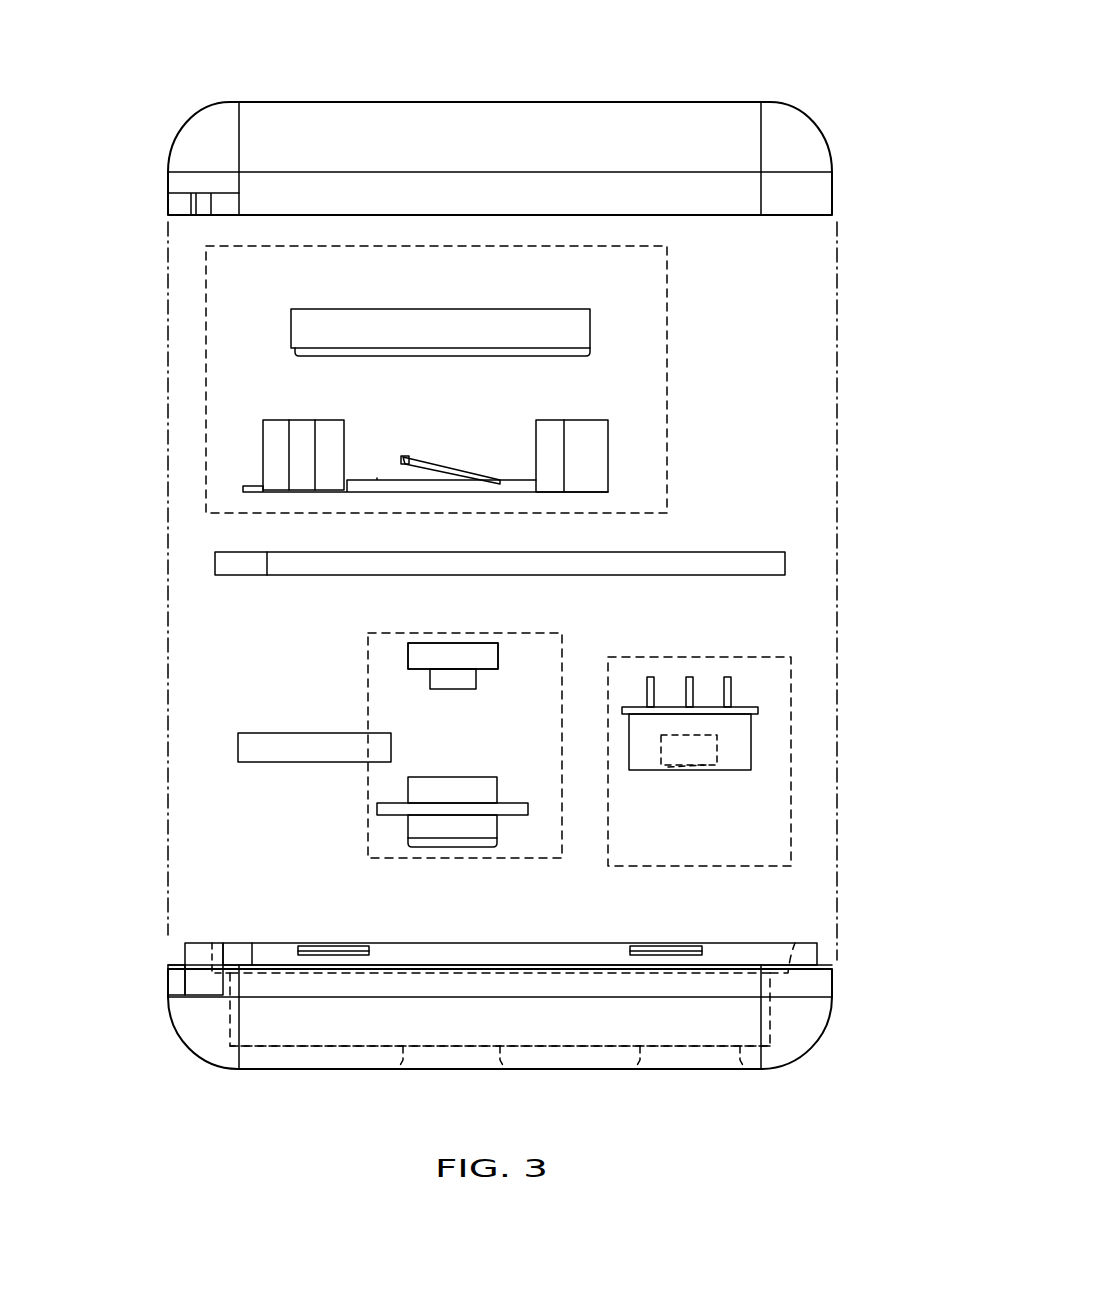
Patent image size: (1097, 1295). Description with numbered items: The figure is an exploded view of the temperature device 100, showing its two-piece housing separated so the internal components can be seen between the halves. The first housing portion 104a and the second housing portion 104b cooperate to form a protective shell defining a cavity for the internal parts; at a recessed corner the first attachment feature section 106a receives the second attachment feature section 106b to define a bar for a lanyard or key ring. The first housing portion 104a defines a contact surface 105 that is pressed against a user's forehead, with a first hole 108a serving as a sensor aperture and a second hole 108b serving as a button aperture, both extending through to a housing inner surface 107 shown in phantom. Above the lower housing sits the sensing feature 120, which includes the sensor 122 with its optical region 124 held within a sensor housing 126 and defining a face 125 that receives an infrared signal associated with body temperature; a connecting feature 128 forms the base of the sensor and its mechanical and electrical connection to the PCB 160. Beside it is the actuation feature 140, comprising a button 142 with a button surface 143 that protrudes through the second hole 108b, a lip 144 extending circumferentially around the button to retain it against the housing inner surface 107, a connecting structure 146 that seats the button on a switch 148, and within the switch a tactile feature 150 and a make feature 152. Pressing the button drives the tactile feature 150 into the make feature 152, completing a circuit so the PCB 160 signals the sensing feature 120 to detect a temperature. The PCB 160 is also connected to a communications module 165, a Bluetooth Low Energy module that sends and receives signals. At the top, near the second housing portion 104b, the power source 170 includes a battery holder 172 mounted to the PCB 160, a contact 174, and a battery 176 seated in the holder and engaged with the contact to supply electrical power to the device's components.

The temperature device 100 is at (694, 62).
The first housing portion 104a is at (803, 1030).
The second housing portion 104b is at (808, 116).
The contact surface 105 is at (750, 1069).
The first attachment feature section 106a is at (175, 980).
The second attachment feature section 106b is at (198, 203).
The housing inner surface 107 is at (280, 1046).
The first hole 108a is at (677, 1052).
The second hole 108b is at (450, 1068).
The sensing feature 120 is at (791, 762).
The sensor 122 is at (751, 741).
The optical region 124 is at (700, 757).
The face 125 is at (668, 767).
The sensor housing 126 is at (627, 757).
The connecting feature 128 is at (731, 685).
The actuation feature 140 is at (562, 693).
The button 142 is at (408, 826).
The button surface 143 is at (433, 848).
The lip 144 is at (377, 808).
The connecting structure 146 is at (497, 792).
The switch 148 is at (408, 658).
The tactile feature 150 is at (476, 683).
The make feature 152 is at (498, 658).
The PCB 160 is at (257, 548).
The communications module 165 is at (238, 748).
The power source 170 is at (263, 456).
The battery holder 172 is at (586, 420).
The contact 174 is at (410, 463).
The battery 176 is at (291, 327).